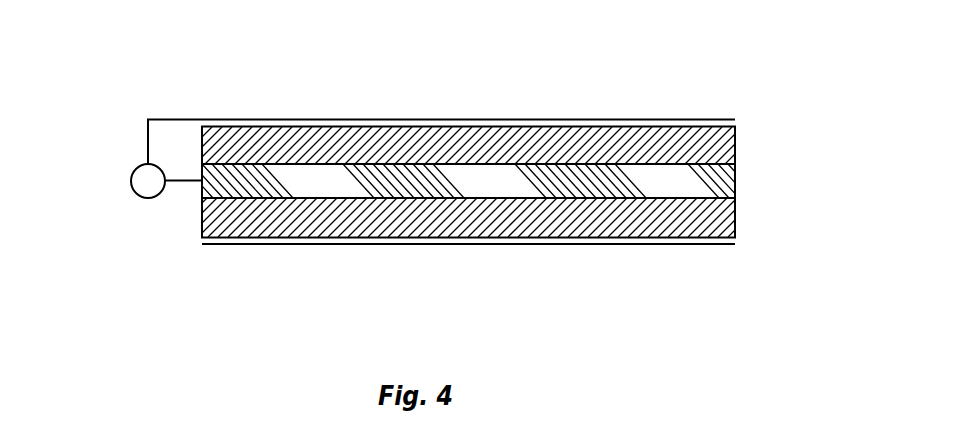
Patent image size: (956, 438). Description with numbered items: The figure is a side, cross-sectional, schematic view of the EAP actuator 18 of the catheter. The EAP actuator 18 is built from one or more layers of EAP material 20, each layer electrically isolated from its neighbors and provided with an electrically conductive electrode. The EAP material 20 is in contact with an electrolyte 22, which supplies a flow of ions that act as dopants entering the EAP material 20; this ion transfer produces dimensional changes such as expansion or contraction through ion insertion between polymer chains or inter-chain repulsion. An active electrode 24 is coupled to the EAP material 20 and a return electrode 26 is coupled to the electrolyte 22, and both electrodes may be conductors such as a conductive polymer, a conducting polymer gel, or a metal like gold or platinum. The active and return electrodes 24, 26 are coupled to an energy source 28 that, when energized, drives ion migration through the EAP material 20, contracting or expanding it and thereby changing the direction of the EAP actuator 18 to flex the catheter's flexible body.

The EAP actuator 18 is at (493, 178).
The EAP material 20 is at (202, 188).
The electrolyte 22 is at (737, 150).
The active electrode 24 is at (193, 177).
The return electrode 26 is at (565, 245).
The energy source 28 is at (131, 173).